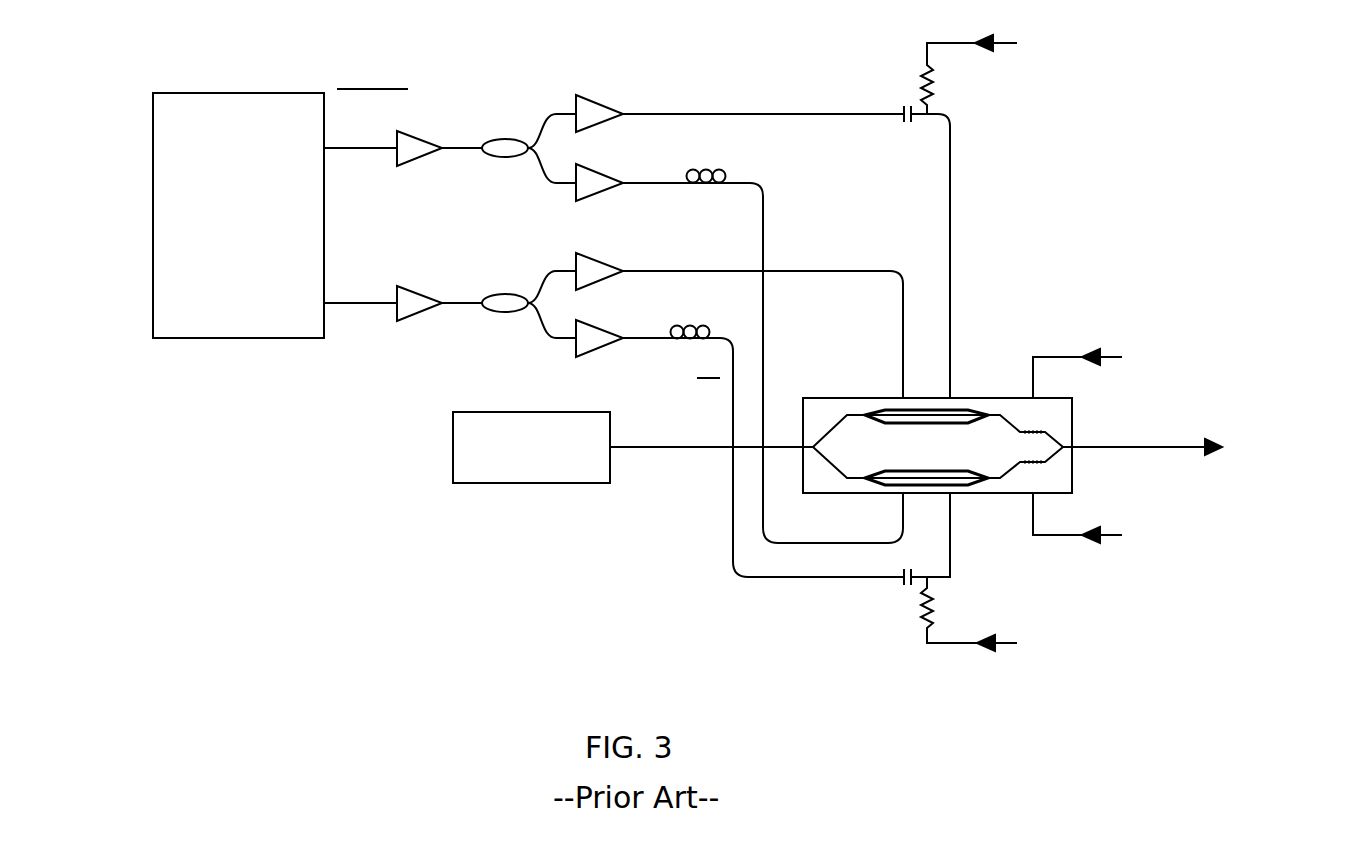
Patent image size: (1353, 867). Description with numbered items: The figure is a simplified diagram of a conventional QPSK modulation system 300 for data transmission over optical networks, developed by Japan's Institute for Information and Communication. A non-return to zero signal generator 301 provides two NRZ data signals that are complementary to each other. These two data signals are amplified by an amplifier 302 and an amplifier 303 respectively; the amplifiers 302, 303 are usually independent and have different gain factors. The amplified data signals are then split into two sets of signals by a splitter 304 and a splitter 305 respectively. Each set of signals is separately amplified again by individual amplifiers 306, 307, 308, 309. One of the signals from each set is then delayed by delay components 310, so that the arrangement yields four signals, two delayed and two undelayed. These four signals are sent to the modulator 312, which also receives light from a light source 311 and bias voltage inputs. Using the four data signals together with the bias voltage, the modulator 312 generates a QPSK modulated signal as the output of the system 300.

The QPSK modulation system 300 is at (1150, 76).
The non-return to zero (NRZ) signal generator 301 is at (242, 343).
The amplifier 302 is at (417, 128).
The amplifier 303 is at (417, 318).
The splitter 304 is at (510, 160).
The splitter 305 is at (510, 318).
The amplifier 306 is at (643, 82).
The amplifier 307 is at (595, 204).
The amplifier 308 is at (598, 256).
The amplifier 309 is at (598, 324).
The delay components 310 is at (712, 197).
The light source 311 is at (515, 488).
The modulator 312 is at (1075, 457).